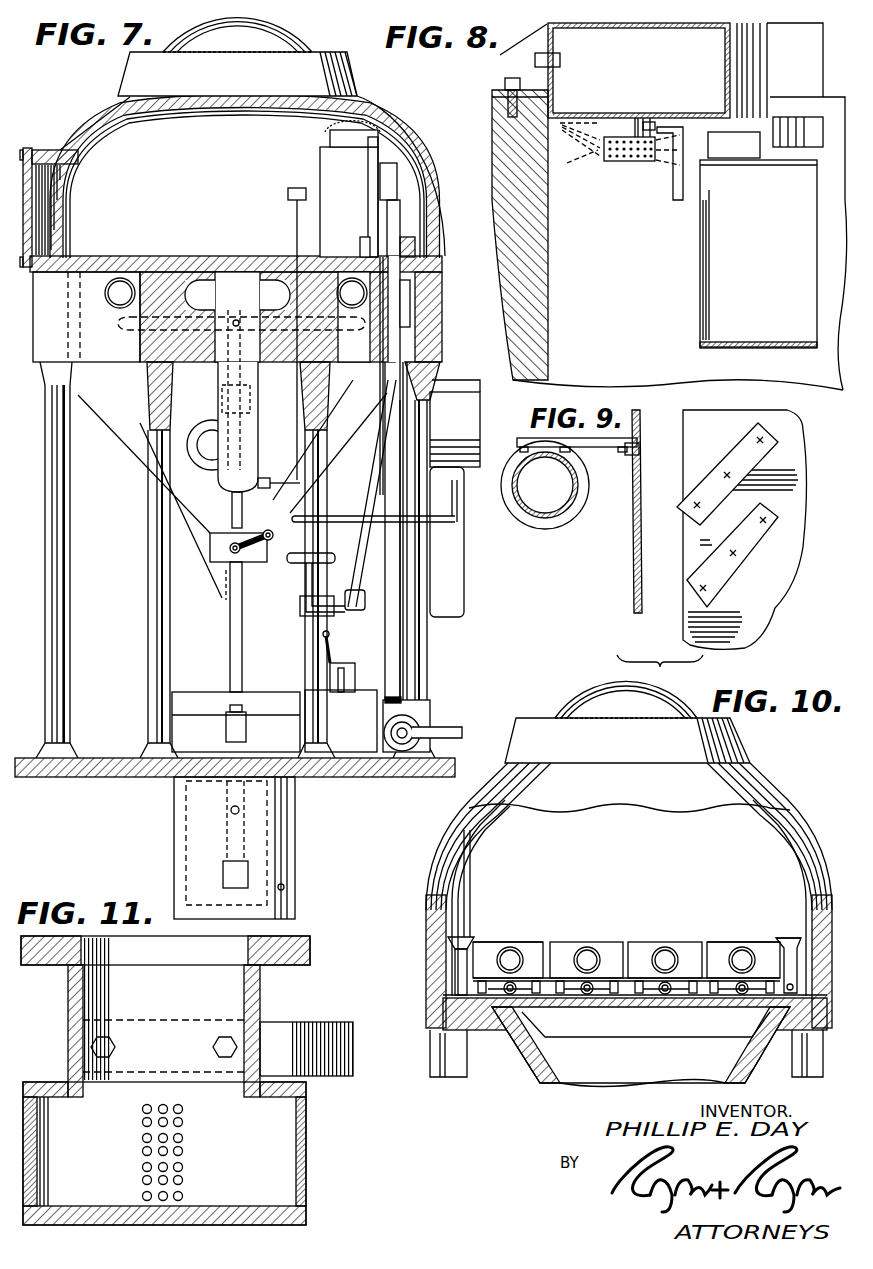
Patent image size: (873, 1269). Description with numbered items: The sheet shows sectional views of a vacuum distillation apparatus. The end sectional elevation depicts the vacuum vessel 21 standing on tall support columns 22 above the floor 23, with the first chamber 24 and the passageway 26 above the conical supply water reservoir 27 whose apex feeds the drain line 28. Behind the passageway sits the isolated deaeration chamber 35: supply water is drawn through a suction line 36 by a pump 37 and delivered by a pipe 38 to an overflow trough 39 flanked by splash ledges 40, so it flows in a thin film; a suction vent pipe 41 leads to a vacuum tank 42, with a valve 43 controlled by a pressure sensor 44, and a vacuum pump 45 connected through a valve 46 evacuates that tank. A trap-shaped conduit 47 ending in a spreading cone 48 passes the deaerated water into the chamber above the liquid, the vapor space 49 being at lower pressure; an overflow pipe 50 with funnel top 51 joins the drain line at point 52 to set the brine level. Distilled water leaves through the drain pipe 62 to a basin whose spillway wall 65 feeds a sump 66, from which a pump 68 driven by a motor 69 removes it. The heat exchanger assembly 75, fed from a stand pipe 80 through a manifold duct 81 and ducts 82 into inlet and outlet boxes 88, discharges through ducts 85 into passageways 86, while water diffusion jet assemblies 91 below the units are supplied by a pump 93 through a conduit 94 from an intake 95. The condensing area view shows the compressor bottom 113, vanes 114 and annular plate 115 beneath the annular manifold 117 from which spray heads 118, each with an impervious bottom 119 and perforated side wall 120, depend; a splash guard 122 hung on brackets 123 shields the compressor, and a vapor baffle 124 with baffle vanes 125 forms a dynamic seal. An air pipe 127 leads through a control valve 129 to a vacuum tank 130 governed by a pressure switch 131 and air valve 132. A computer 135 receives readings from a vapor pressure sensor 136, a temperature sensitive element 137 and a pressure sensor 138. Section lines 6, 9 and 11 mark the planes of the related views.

In FIG. 7, the section line 6— 6 is at (362, 100).
In FIG. 8, the section line 9— 9 is at (560, 136).
In FIG. 9, the section line 11— 11 is at (515, 480).
In FIG. 7, the vacuum vessel 21 is at (90, 130).
In FIG. 10, the vacuum vessel 21 is at (804, 817).
In FIG. 7, the support columns 22 is at (72, 612).
In FIG. 10, the support columns 22 is at (432, 1066).
In FIG. 7, the floor 23 is at (105, 767).
In FIG. 7, the first chamber 24 is at (118, 98).
In FIG. 10, the first chamber 24 is at (428, 871).
In FIG. 7, the passageway 26 is at (247, 110).
In FIG. 7, the supply water reservoir 27 is at (140, 420).
In FIG. 10, the supply water reservoir 27 is at (504, 1068).
In FIG. 7, the drain line 28 is at (243, 607).
In FIG. 7, the deaeration chamber 35 is at (400, 180).
In FIG. 7, the suction line 36 is at (436, 736).
In FIG. 7, the pump 37 is at (412, 712).
In FIG. 7, the pipe 38 is at (408, 640).
In FIG. 7, the overflow trough 39 is at (402, 208).
In FIG. 7, the splash ledge 40 is at (366, 238).
In FIG. 7, the suction vent pipe 41 is at (378, 157).
In FIG. 7, the vacuum tank 42 is at (366, 624).
In FIG. 7, the valve 43 is at (350, 616).
In FIG. 7, the pressure sensor 44 is at (378, 566).
In FIG. 7, the vacuum pump 45 is at (346, 758).
In FIG. 7, the valve 46 is at (345, 752).
In FIG. 7, the conduit 47 is at (410, 297).
In FIG. 10, the conduit 47 is at (778, 942).
In FIG. 10, the spreading cone 48 is at (792, 936).
In FIG. 10, the vapor space 49 is at (629, 828).
In FIG. 7, the overflow pipe 50 is at (72, 392).
In FIG. 10, the overflow pipe 50 is at (454, 966).
In FIG. 7, the funnel top 51 is at (78, 270).
In FIG. 10, the funnel top 51 is at (461, 935).
In FIG. 7, the connection point 52 is at (226, 606).
In FIG. 7, the drain pipe 62 is at (231, 506).
In FIG. 7, the spillway wall 65 is at (210, 832).
In FIG. 7, the sump 66 is at (285, 888).
In FIG. 7, the pump 68 is at (249, 872).
In FIG. 7, the motor 69 is at (247, 748).
In FIG. 10, the heat exchanger assembly 75 is at (647, 938).
In FIG. 7, the stand pipe 80 is at (250, 442).
In FIG. 7, the manifold duct 81 is at (258, 310).
In FIG. 7, the ducts 82 is at (207, 287).
In FIG. 10, the ducts 82 is at (590, 948).
In FIG. 10, the discharge ducts 85 is at (512, 945).
In FIG. 7, the passageways 86 is at (113, 305).
In FIG. 10, the inlet and outlet boxes 88 is at (532, 945).
In FIG. 10, the water diffusion jet assemblies 91 is at (530, 996).
In FIG. 7, the pump 93 is at (200, 436).
In FIG. 7, the conduit 94 is at (244, 385).
In FIG. 7, the pump intake 95 is at (218, 382).
In FIG. 8, the compressor bottom 113 is at (735, 341).
In FIG. 8, the vanes 114 is at (705, 293).
In FIG. 8, the annular plate 115 is at (798, 165).
In FIG. 9, the annular plate 115 is at (765, 611).
In FIG. 8, the annular manifold 117 is at (658, 27).
In FIG. 11, the annular manifold 117 is at (300, 957).
In FIG. 8, the spray heads 118 is at (624, 167).
In FIG. 9, the spray heads 118 is at (542, 532).
In FIG. 11, the spray heads 118 is at (312, 1206).
In FIG. 11, the impervious bottom 119 is at (208, 1214).
In FIG. 8, the perforated side wall 120 is at (634, 128).
In FIG. 11, the perforated side wall 120 is at (306, 1127).
In FIG. 8, the splash guard 122 is at (677, 196).
In FIG. 9, the splash guard 122 is at (634, 597).
In FIG. 9, the brackets 123 is at (620, 442).
In FIG. 11, the brackets 123 is at (291, 1029).
In FIG. 8, the vapor baffle 124 is at (780, 118).
In FIG. 8, the baffle vanes 125 is at (727, 150).
In FIG. 9, the baffle vanes 125 is at (800, 476).
In FIG. 7, the air pipe 127 is at (305, 566).
In FIG. 7, the control valve 129 is at (343, 578).
In FIG. 7, the vacuum tank 130 is at (328, 658).
In FIG. 7, the pressure switch 131 is at (323, 636).
In FIG. 7, the air valve 132 is at (330, 678).
In FIG. 7, the computer 135 is at (481, 400).
In FIG. 7, the vapor pressure sensor 136 is at (288, 193).
In FIG. 7, the temperature sensitive element 137 is at (266, 477).
In FIG. 7, the pressure sensor 138 is at (310, 575).